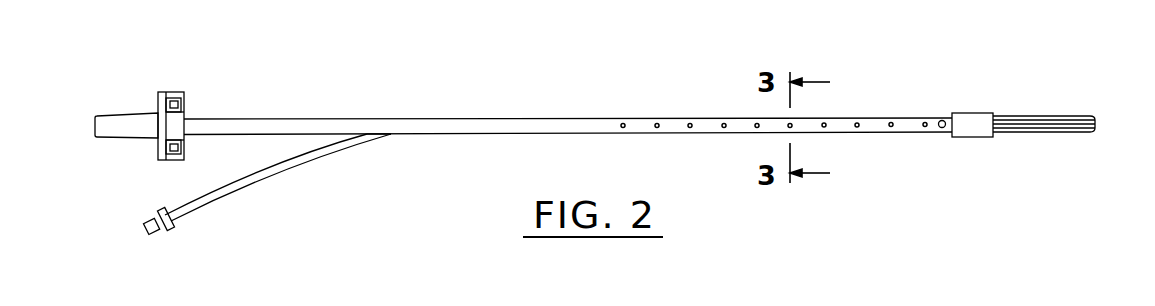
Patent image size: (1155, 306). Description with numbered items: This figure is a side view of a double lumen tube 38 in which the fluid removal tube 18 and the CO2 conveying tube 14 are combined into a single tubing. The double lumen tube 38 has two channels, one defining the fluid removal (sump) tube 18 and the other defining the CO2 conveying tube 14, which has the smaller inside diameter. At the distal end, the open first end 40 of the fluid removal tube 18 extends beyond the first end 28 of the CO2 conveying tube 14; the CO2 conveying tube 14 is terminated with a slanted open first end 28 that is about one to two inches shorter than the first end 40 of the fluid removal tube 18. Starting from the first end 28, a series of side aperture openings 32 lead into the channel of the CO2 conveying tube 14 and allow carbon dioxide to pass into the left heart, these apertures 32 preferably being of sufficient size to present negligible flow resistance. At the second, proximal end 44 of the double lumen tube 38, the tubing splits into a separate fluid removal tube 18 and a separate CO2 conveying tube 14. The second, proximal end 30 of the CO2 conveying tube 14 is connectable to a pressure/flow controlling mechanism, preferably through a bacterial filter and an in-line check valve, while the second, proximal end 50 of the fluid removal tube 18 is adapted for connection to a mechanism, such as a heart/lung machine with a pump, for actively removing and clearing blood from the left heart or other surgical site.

The CO2 conveying tube 14 is at (223, 187).
The fluid removal tube 18 is at (297, 123).
The first end of the CO2 conveying tube 28 is at (945, 118).
The second (proximal) end of the CO2 conveying tube 30 is at (153, 236).
The side aperture openings 32 is at (657, 124).
The double lumen tube 38 is at (514, 104).
The open first end of the fluid removal tube 40 is at (1017, 115).
The second (proximal) end of the double lumen tube 44 is at (396, 130).
The second (proximal) end of the fluid removal tube 50 is at (148, 118).